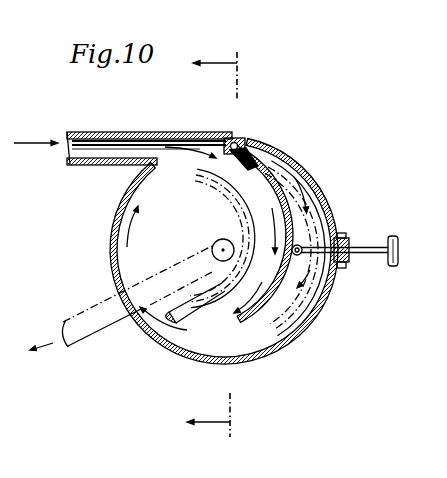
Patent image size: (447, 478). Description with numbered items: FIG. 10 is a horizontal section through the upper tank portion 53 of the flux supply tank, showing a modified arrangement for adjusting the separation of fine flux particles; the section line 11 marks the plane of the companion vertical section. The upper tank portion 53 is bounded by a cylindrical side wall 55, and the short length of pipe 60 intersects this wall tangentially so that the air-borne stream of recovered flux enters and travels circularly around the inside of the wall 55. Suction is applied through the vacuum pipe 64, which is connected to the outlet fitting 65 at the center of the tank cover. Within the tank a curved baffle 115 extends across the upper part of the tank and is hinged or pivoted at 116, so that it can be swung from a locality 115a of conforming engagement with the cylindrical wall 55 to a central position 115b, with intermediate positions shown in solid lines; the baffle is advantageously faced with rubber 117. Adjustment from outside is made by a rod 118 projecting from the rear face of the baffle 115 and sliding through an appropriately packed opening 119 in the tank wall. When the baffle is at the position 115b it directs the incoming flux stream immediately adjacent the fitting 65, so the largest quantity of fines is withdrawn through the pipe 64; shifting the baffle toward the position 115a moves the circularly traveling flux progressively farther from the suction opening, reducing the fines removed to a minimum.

The section line 11- 11 is at (212, 247).
The pipe 60 is at (132, 122).
The cylindrical side wall 55 is at (258, 362).
The curved baffle 115 is at (268, 312).
The locality of conforming engagement 115a is at (318, 188).
The central position 115b is at (252, 215).
The rubber facing 117 is at (278, 259).
The hinge or pivot 116 is at (240, 140).
The outlet fitting 65 is at (217, 242).
The rod 118 is at (369, 262).
The packed opening 119 is at (346, 240).
The vacuum pipe 64 is at (98, 343).
The upper tank portion 53 is at (178, 338).